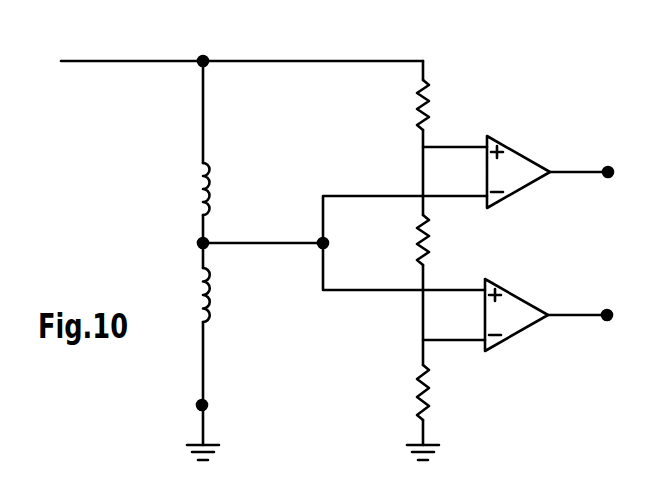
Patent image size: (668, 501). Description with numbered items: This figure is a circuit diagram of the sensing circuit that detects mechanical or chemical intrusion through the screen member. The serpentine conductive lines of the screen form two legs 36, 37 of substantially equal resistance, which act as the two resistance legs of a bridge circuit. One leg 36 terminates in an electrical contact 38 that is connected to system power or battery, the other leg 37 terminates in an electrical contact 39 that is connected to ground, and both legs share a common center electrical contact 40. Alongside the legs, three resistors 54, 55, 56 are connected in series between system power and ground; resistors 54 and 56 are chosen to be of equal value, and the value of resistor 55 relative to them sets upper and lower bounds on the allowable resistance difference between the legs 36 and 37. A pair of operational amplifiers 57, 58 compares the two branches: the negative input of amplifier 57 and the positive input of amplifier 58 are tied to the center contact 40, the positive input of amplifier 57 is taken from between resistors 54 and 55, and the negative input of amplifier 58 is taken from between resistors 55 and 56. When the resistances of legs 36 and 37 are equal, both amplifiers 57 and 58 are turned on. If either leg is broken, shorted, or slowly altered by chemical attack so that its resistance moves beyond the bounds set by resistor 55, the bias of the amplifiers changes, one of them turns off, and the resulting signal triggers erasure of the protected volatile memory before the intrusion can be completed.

The leg 36 is at (213, 200).
The leg 37 is at (210, 296).
The electrical contact 38 is at (203, 65).
The electrical contact 39 is at (207, 406).
The common center electrical contact 40 is at (200, 243).
The resistor 54 is at (435, 107).
The resistor 55 is at (432, 243).
The resistor 56 is at (416, 398).
The operational amplifier 57 is at (513, 167).
The operational amplifier 58 is at (515, 322).